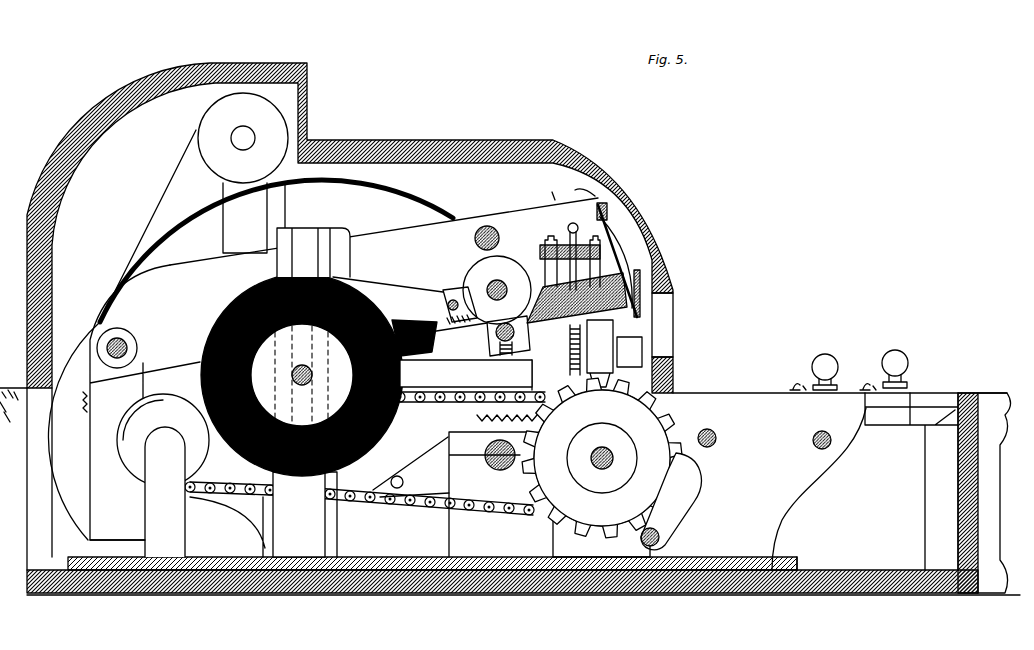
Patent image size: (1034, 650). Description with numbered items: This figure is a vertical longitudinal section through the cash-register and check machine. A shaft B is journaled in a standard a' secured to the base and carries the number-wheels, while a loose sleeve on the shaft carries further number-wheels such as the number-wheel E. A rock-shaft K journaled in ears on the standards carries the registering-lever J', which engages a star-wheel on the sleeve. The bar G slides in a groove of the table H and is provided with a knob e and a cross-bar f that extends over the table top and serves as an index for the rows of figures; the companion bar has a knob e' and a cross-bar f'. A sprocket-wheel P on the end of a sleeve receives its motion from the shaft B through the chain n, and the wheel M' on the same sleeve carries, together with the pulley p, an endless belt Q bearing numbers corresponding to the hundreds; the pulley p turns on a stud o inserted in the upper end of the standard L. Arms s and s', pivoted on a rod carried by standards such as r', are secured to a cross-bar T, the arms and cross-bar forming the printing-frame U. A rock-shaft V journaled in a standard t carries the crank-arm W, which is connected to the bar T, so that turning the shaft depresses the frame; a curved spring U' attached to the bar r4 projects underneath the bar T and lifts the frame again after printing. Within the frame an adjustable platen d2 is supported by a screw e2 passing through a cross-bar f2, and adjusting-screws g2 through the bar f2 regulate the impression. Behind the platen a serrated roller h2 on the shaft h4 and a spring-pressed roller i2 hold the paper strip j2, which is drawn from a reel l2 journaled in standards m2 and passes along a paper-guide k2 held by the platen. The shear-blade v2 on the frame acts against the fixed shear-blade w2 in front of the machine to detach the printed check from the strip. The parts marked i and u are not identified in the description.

The pulley p is at (243, 138).
The stud o is at (243, 138).
The endless belt Q is at (168, 200).
The standard L is at (254, 218).
The printing-frame U is at (384, 231).
The curved spring U' is at (276, 251).
The arm s' is at (145, 402).
The arm s is at (122, 345).
The bar r4 is at (92, 408).
The sprocket-wheel P is at (163, 440).
The shaft i is at (163, 447).
The rock-shaft K is at (692, 540).
The standard r' is at (117, 514).
The wheel M' is at (227, 527).
The standards m2 is at (305, 514).
The reel l2 is at (302, 375).
The chain n is at (365, 459).
The crank-arm W is at (411, 467).
The rock-shaft V is at (490, 466).
The standard t is at (507, 477).
The standard a' is at (601, 547).
The shaft B is at (602, 458).
The registering-lever J' is at (671, 505).
The number-wheel E is at (758, 429).
The table H is at (840, 382).
The bar G is at (911, 481).
The knob e is at (895, 369).
The knob e' is at (825, 372).
The cross-bar f is at (868, 379).
The cross-bar f' is at (798, 379).
The cross-bar T is at (493, 235).
The paper strip j2 is at (388, 283).
The serrated roller h2 is at (478, 280).
The shaft h4 is at (497, 290).
The spring-pressed roller i2 is at (492, 335).
The paper-guide k2 is at (557, 314).
The cross-bar f2 is at (570, 255).
The screw e2 is at (570, 257).
The adjusting-screws g2 is at (576, 256).
The shear-blade w2 is at (641, 285).
The shear-blade v2 is at (681, 305).
The adjustable platen d2 is at (622, 314).
The pin u is at (573, 187).